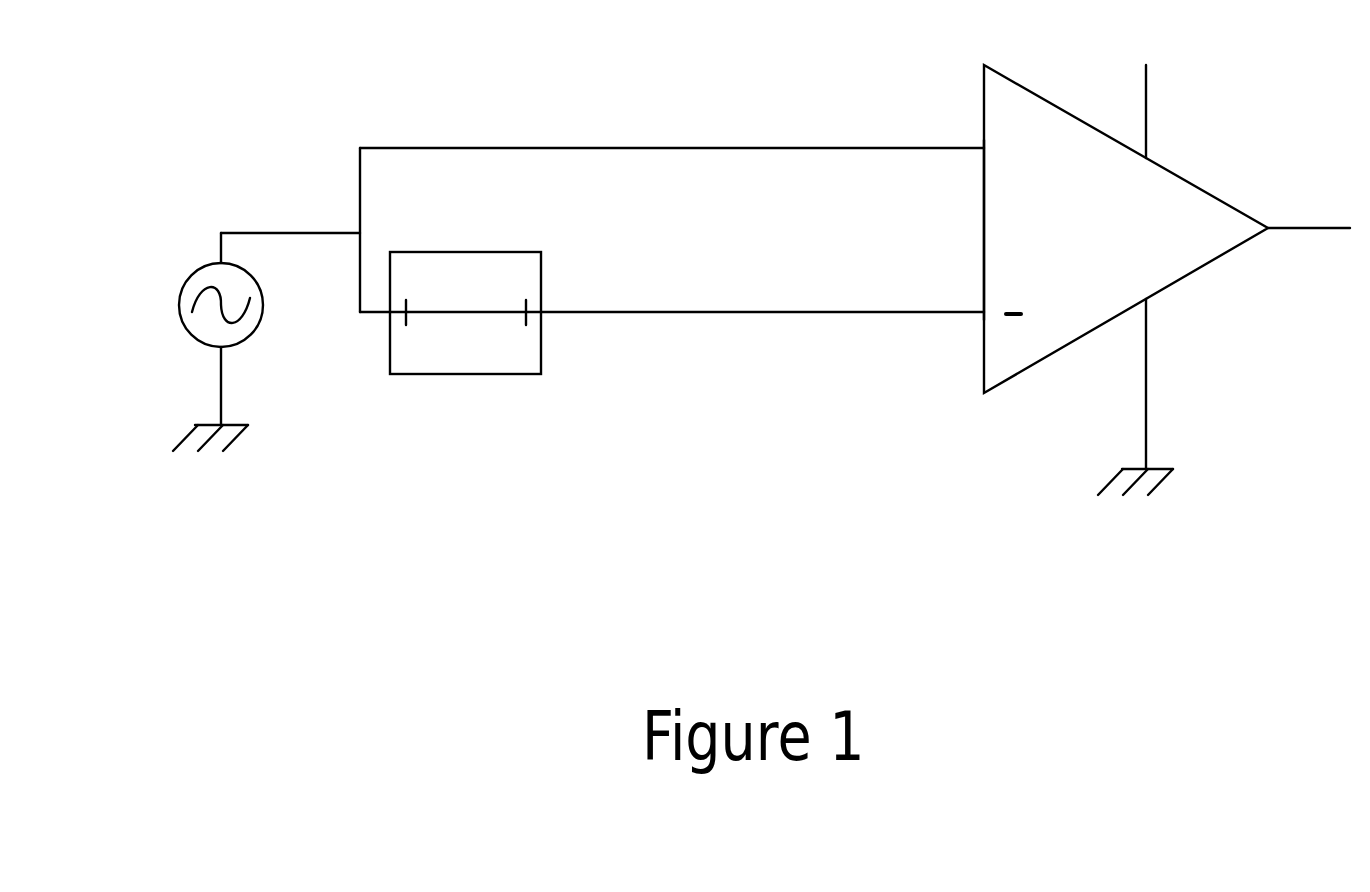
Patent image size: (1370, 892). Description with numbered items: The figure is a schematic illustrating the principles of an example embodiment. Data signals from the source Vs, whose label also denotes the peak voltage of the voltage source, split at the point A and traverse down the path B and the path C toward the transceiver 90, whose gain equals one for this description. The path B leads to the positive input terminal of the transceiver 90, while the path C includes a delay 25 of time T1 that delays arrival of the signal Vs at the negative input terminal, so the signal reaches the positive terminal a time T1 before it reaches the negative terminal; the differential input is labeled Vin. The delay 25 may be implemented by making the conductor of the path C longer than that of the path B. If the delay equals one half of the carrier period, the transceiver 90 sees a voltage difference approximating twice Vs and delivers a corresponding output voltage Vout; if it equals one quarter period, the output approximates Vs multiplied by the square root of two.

The delay 25 is at (505, 352).
The transceiver 90 is at (1092, 292).
The point A is at (322, 202).
The path B is at (506, 103).
The path C is at (618, 351).
The source Vs is at (191, 342).
The input voltage Vin is at (950, 230).
The output voltage Vout is at (1309, 203).